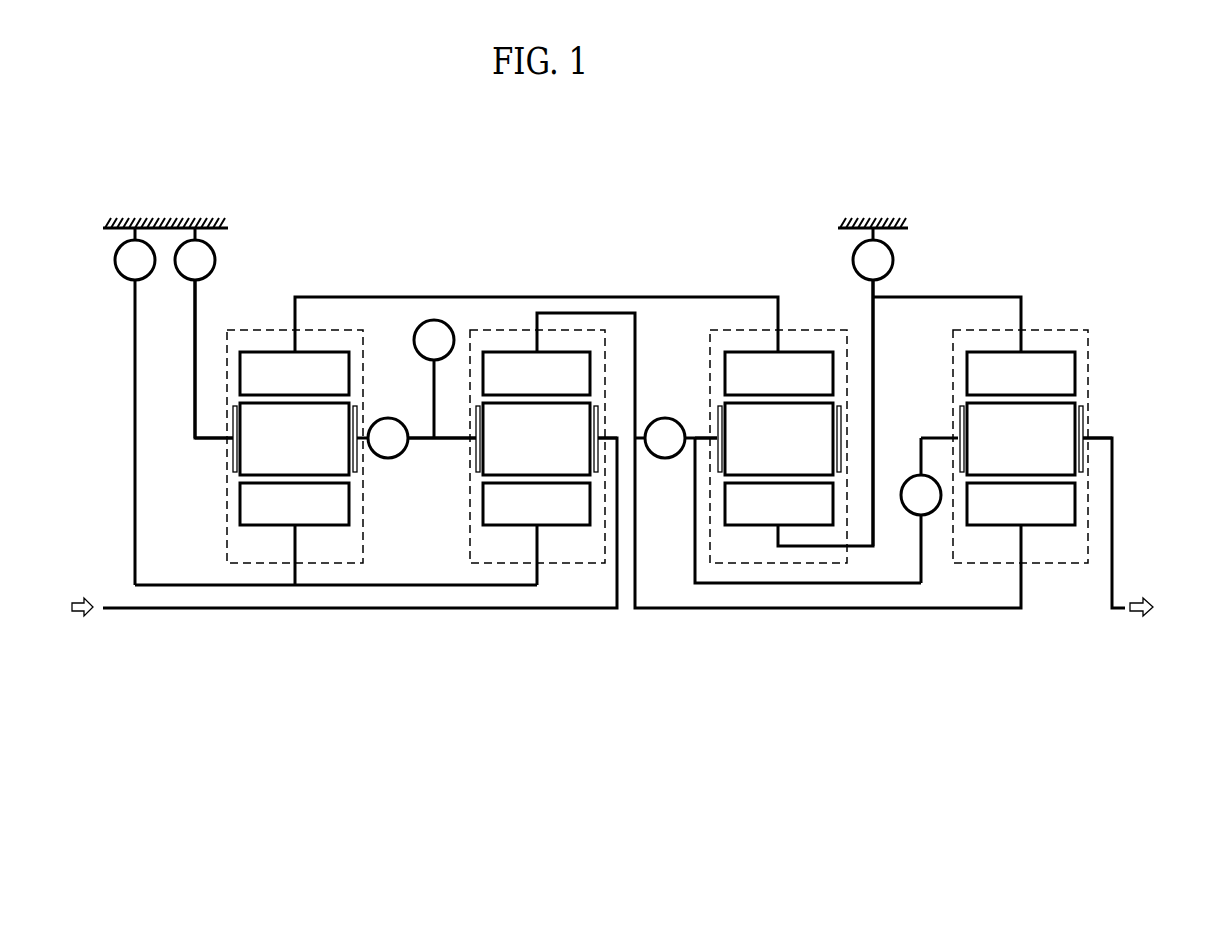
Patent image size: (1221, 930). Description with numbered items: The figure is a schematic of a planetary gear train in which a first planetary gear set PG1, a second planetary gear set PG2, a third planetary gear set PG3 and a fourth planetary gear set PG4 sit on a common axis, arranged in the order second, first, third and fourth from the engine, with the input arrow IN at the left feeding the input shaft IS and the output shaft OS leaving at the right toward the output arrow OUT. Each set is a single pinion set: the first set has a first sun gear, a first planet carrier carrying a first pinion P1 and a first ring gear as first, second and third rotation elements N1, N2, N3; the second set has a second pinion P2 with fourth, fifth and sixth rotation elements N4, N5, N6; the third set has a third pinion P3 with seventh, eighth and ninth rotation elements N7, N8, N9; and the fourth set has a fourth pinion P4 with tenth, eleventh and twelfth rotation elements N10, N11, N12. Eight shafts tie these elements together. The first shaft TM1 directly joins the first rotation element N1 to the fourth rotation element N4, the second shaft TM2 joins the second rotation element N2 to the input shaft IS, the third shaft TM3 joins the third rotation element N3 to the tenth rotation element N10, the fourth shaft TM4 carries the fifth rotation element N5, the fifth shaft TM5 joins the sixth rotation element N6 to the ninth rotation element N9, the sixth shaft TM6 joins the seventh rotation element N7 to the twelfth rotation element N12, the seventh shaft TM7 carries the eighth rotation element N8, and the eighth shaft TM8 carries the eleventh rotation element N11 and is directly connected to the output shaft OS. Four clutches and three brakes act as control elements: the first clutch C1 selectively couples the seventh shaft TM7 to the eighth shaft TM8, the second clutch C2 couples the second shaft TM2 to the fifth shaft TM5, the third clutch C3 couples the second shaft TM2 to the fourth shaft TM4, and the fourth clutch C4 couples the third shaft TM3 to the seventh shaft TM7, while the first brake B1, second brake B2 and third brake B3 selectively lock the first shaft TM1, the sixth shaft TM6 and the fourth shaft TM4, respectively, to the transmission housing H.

The transmission housing H is at (166, 223).
The first brake B1 is at (135, 406).
The second brake B2 is at (873, 387).
The third brake B3 is at (195, 333).
The first clutch C1 is at (921, 510).
The second clutch C2 is at (434, 379).
The third clutch C3 is at (416, 438).
The fourth clutch C4 is at (676, 438).
The input shaft IS is at (127, 611).
The output shaft OS is at (1113, 611).
The input IN is at (67, 607).
The output OUT is at (1162, 607).
The first shaft TM1 is at (420, 587).
The second shaft TM2 is at (445, 445).
The third shaft TM3 is at (638, 560).
The fourth shaft TM4 is at (195, 397).
The fifth shaft TM5 is at (482, 296).
The sixth shaft TM6 is at (876, 334).
The seventh shaft TM7 is at (820, 585).
The eighth shaft TM8 is at (928, 436).
The first planetary gear set PG1 is at (586, 571).
The second planetary gear set PG2 is at (258, 571).
The third planetary gear set PG3 is at (758, 571).
The fourth planetary gear set PG4 is at (1055, 571).
The first rotation element N1 is at (536, 504).
The second rotation element N2 is at (612, 437).
The third rotation element N3 is at (536, 373).
The fourth rotation element N4 is at (294, 504).
The fifth rotation element N5 is at (206, 442).
The sixth rotation element N6 is at (294, 373).
The seventh rotation element N7 is at (779, 504).
The eighth rotation element N8 is at (702, 437).
The ninth rotation element N9 is at (779, 373).
The tenth rotation element N10 is at (1021, 504).
The eleventh rotation element N11 is at (1101, 436).
The twelfth rotation element N12 is at (974, 346).
The first pinion P1 is at (537, 439).
The second pinion P2 is at (295, 439).
The third pinion P3 is at (779, 439).
The fourth pinion P4 is at (1021, 439).